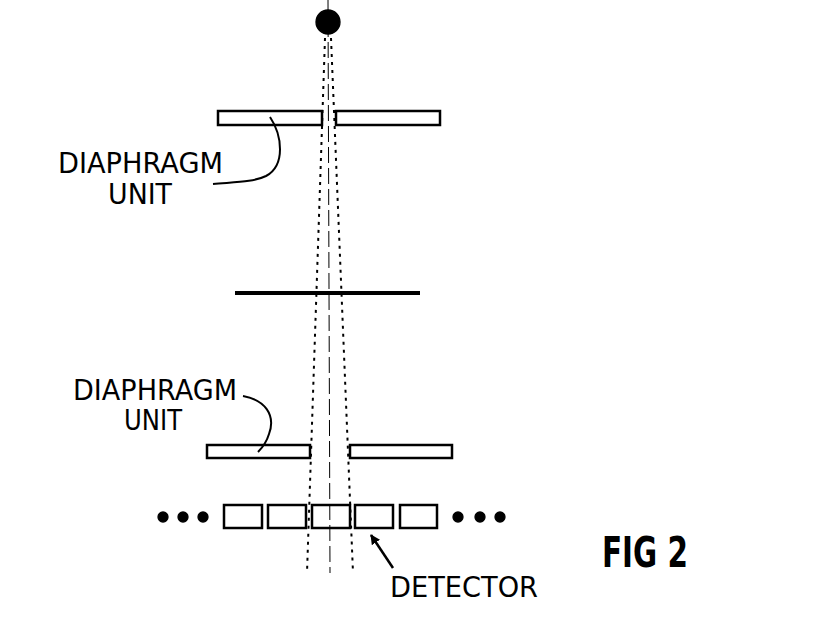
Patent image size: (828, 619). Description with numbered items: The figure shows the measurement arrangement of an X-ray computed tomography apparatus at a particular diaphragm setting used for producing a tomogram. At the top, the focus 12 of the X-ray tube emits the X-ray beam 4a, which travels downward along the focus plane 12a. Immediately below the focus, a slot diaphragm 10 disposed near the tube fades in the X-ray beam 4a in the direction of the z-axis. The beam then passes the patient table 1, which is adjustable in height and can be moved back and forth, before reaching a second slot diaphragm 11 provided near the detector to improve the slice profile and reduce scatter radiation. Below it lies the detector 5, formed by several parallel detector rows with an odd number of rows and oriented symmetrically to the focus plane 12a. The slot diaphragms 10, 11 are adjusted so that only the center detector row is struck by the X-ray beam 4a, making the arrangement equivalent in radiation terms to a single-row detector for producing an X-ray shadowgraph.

The focus 12 is at (341, 22).
The slot diaphragm 10 is at (432, 118).
The focus plane 12a is at (326, 225).
The patient table 1 is at (258, 290).
The X-ray beam 4a is at (345, 385).
The second slot diaphragm 11 is at (432, 452).
The detector 5 is at (276, 538).